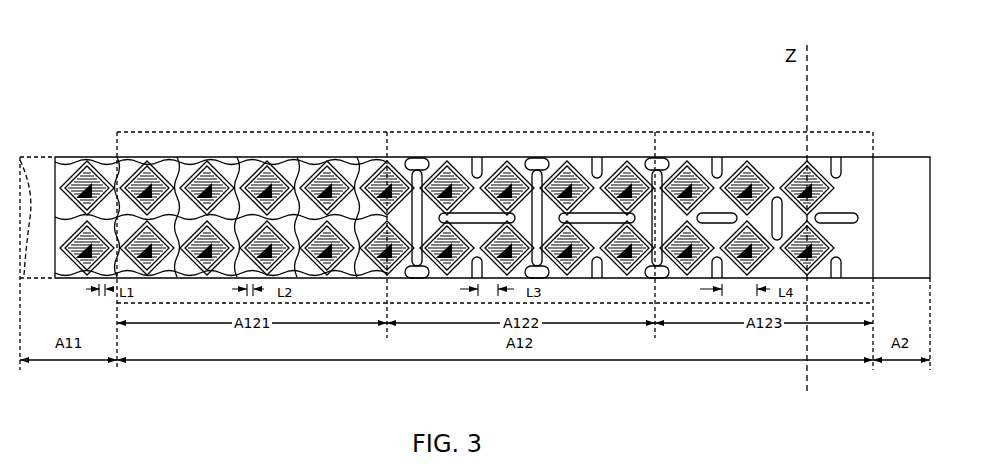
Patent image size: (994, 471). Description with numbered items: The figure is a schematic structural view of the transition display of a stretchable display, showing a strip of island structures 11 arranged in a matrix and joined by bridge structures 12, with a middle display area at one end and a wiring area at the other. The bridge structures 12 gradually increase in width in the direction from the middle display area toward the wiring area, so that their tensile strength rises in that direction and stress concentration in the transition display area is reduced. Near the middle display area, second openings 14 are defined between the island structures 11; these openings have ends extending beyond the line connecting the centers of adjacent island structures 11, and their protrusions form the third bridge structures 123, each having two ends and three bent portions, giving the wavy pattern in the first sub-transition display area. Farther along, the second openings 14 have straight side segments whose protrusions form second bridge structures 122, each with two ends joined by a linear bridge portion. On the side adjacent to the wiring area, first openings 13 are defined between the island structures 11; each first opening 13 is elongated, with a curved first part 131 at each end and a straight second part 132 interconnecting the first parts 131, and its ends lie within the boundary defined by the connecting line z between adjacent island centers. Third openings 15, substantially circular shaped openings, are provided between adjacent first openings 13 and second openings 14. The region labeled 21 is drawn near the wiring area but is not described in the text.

The island structure 11 is at (742, 160).
The bridge structure 12 is at (64, 158).
The first opening 13 is at (874, 173).
The second opening 14 is at (298, 162).
The third opening 15 is at (694, 157).
The second electrode block 21 is at (779, 158).
The second bridge structure 122 is at (543, 160).
The third bridge structure 123 is at (183, 163).
The first part 131 is at (836, 157).
The second part 132 is at (852, 212).